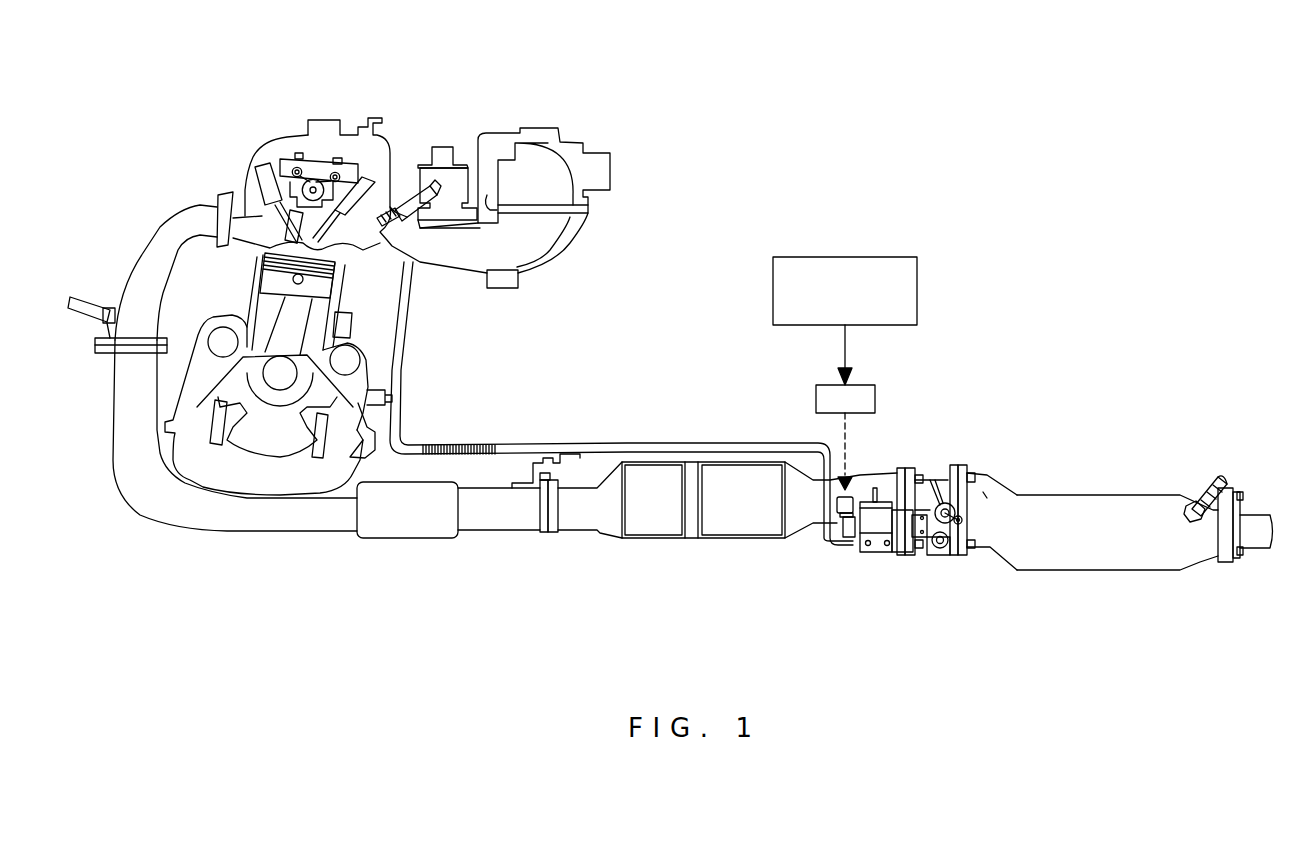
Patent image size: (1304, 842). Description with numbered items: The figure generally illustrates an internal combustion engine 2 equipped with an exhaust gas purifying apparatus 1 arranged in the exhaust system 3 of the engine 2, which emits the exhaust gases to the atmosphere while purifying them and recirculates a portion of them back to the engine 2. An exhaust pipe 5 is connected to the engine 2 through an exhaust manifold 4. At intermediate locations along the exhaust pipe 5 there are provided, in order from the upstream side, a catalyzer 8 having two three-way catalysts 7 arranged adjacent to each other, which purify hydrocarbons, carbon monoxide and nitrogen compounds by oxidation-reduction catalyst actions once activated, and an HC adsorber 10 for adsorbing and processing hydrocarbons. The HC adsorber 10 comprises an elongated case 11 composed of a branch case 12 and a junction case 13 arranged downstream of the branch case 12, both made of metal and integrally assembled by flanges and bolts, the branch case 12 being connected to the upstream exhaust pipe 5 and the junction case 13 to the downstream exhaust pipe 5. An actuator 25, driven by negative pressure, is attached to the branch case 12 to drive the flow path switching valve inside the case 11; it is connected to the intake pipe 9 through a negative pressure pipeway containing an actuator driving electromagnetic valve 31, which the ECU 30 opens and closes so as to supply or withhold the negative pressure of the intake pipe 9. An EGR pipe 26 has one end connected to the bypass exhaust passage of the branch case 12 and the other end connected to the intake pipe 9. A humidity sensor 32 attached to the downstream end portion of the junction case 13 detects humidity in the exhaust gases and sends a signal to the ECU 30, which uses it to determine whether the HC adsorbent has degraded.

The exhaust gas purifying apparatus 1 is at (685, 64).
The internal combustion engine 2 is at (272, 135).
The exhaust system 3 is at (97, 228).
The exhaust manifold 4 is at (210, 207).
The exhaust pipe 5 is at (270, 531).
The three-way catalysts 7 is at (728, 527).
The catalyzer 8 is at (607, 530).
The intake pipe 9 is at (570, 243).
The HC adsorber 10 is at (1087, 392).
The case 11 is at (1018, 617).
The branch case 12 is at (943, 550).
The junction case 13 is at (1030, 567).
The actuator 25 is at (900, 552).
The EGR pipe 26 is at (825, 545).
The ECU 30 is at (905, 257).
The actuator driving electromagnetic valve 31 is at (876, 385).
The humidity sensor 32 is at (1227, 474).